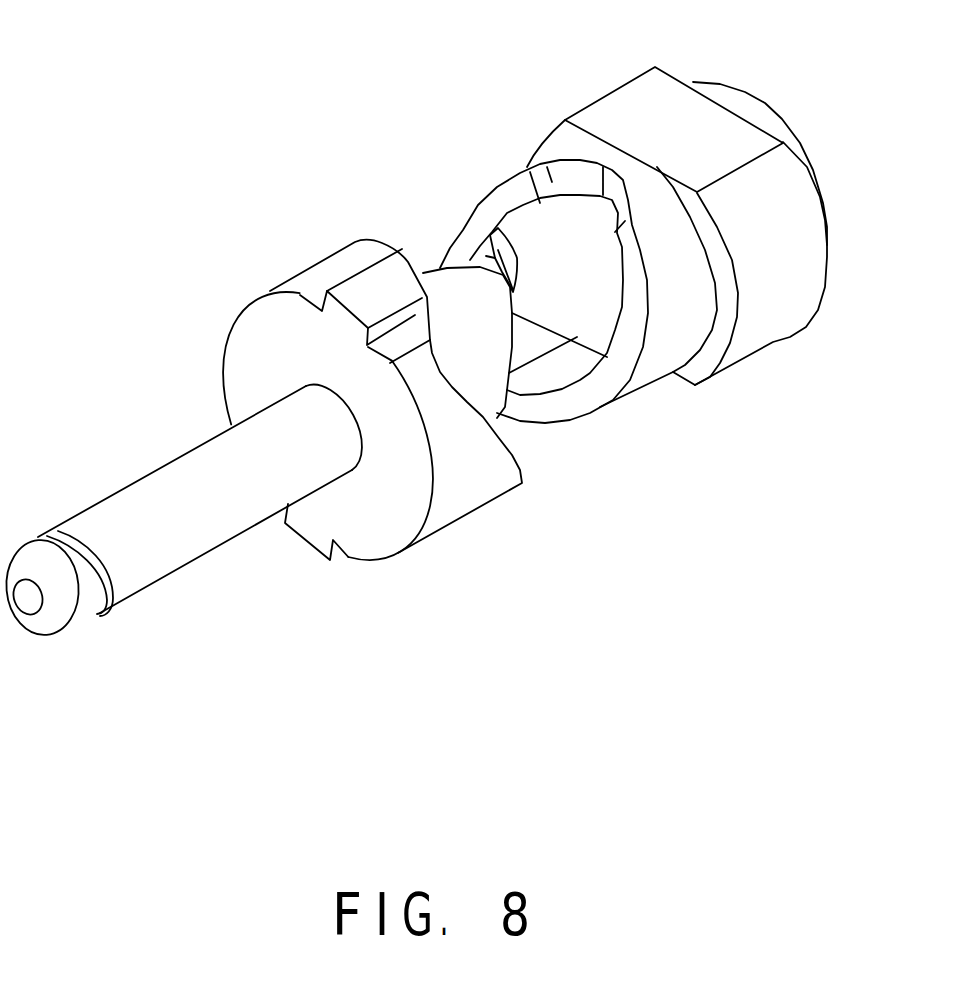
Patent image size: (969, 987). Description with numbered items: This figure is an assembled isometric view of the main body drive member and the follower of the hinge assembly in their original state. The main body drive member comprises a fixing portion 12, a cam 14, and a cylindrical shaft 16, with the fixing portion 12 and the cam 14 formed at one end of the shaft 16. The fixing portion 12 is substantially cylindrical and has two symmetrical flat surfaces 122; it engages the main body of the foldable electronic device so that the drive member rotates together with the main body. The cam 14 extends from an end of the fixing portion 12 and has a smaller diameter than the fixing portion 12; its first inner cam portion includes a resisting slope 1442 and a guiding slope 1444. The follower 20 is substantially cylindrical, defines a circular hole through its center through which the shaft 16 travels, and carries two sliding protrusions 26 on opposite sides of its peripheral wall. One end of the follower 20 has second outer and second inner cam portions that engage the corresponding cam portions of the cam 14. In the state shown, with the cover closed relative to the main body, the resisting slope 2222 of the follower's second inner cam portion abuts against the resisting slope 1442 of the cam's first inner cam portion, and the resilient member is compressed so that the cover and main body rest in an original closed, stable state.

The fixing portion 12 is at (790, 263).
The flat surfaces 122 is at (673, 100).
The cam 14 is at (672, 322).
The resisting slope 1442 is at (497, 230).
The guiding slope 1444 is at (545, 335).
The cylindrical shaft 16 is at (193, 523).
The follower 20 is at (462, 480).
The sliding protrusions 26 is at (367, 290).
The resisting slope 2222 is at (490, 258).